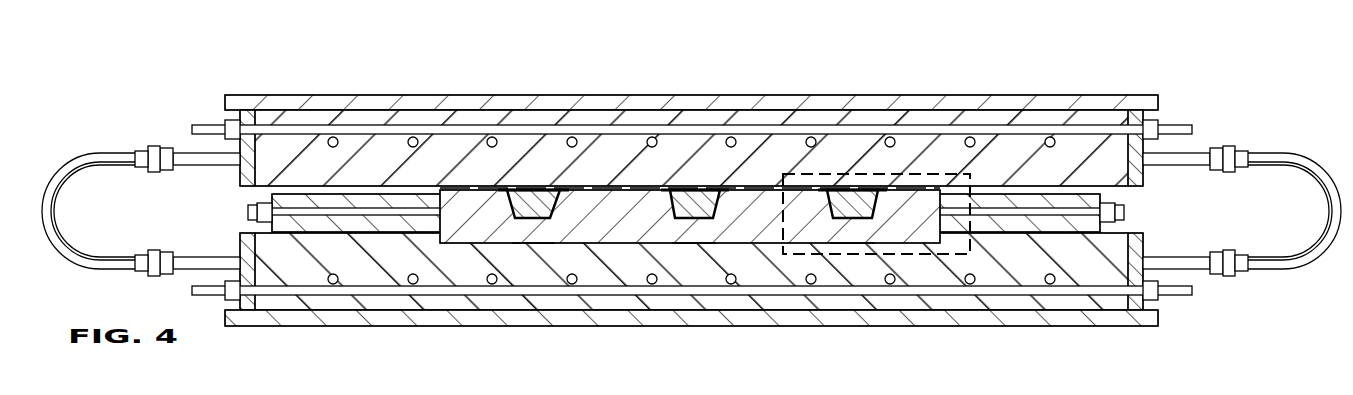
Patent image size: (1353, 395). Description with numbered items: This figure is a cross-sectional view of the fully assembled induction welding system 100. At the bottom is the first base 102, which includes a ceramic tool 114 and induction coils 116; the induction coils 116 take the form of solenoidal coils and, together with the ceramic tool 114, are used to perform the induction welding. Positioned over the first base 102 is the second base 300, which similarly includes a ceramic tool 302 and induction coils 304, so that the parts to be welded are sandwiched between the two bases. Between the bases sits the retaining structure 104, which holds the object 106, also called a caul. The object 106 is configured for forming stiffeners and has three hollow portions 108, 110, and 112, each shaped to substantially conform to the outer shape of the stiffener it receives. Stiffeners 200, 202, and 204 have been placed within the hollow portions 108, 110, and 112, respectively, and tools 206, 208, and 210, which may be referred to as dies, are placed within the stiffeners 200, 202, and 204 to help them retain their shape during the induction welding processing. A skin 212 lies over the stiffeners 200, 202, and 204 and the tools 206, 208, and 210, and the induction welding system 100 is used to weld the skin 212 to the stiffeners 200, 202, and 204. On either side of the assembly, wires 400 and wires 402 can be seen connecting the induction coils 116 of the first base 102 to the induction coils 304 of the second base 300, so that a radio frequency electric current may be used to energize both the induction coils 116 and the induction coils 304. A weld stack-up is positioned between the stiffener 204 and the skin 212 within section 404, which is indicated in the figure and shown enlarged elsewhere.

The induction welding system 100 is at (1285, 72).
The first base 102 is at (1031, 330).
The retaining structure 104 is at (625, 246).
The object 106 is at (321, 186).
The hollow portion 108 is at (520, 229).
The hollow portion 110 is at (679, 231).
The hollow portion 112 is at (863, 231).
The ceramic tool 114 is at (312, 327).
The induction coils 116 is at (1201, 273).
The stiffener 200 is at (507, 196).
The stiffener 202 is at (667, 196).
The stiffener 204 is at (831, 196).
The tool 206 is at (529, 195).
The tool 208 is at (689, 195).
The tool 210 is at (847, 196).
The skin 212 is at (600, 187).
The second base 300 is at (1036, 95).
The ceramic tool 302 is at (440, 95).
The induction coils 304 is at (1201, 151).
The wires 400 is at (94, 151).
The wires 402 is at (1288, 151).
The section 404 is at (918, 171).